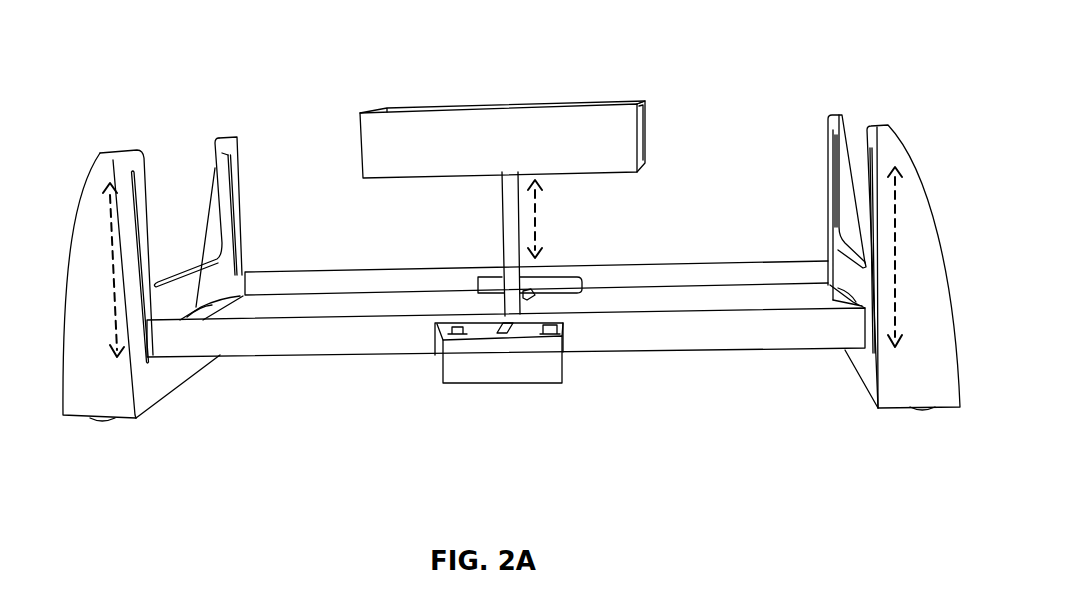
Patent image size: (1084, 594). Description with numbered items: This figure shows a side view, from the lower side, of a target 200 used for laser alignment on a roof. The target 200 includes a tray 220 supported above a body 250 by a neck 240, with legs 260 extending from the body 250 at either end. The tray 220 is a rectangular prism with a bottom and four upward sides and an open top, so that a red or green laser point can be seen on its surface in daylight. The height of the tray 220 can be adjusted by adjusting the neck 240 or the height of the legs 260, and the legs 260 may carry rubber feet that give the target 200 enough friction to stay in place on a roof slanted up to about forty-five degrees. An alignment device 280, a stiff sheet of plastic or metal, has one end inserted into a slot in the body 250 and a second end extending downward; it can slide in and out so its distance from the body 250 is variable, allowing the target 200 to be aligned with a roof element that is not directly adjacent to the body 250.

The target 200 is at (696, 30).
The tray 220 is at (500, 138).
The neck 240 is at (498, 205).
The body 250 is at (416, 328).
The legs 260 is at (90, 270).
The alignment device 280 is at (470, 363).